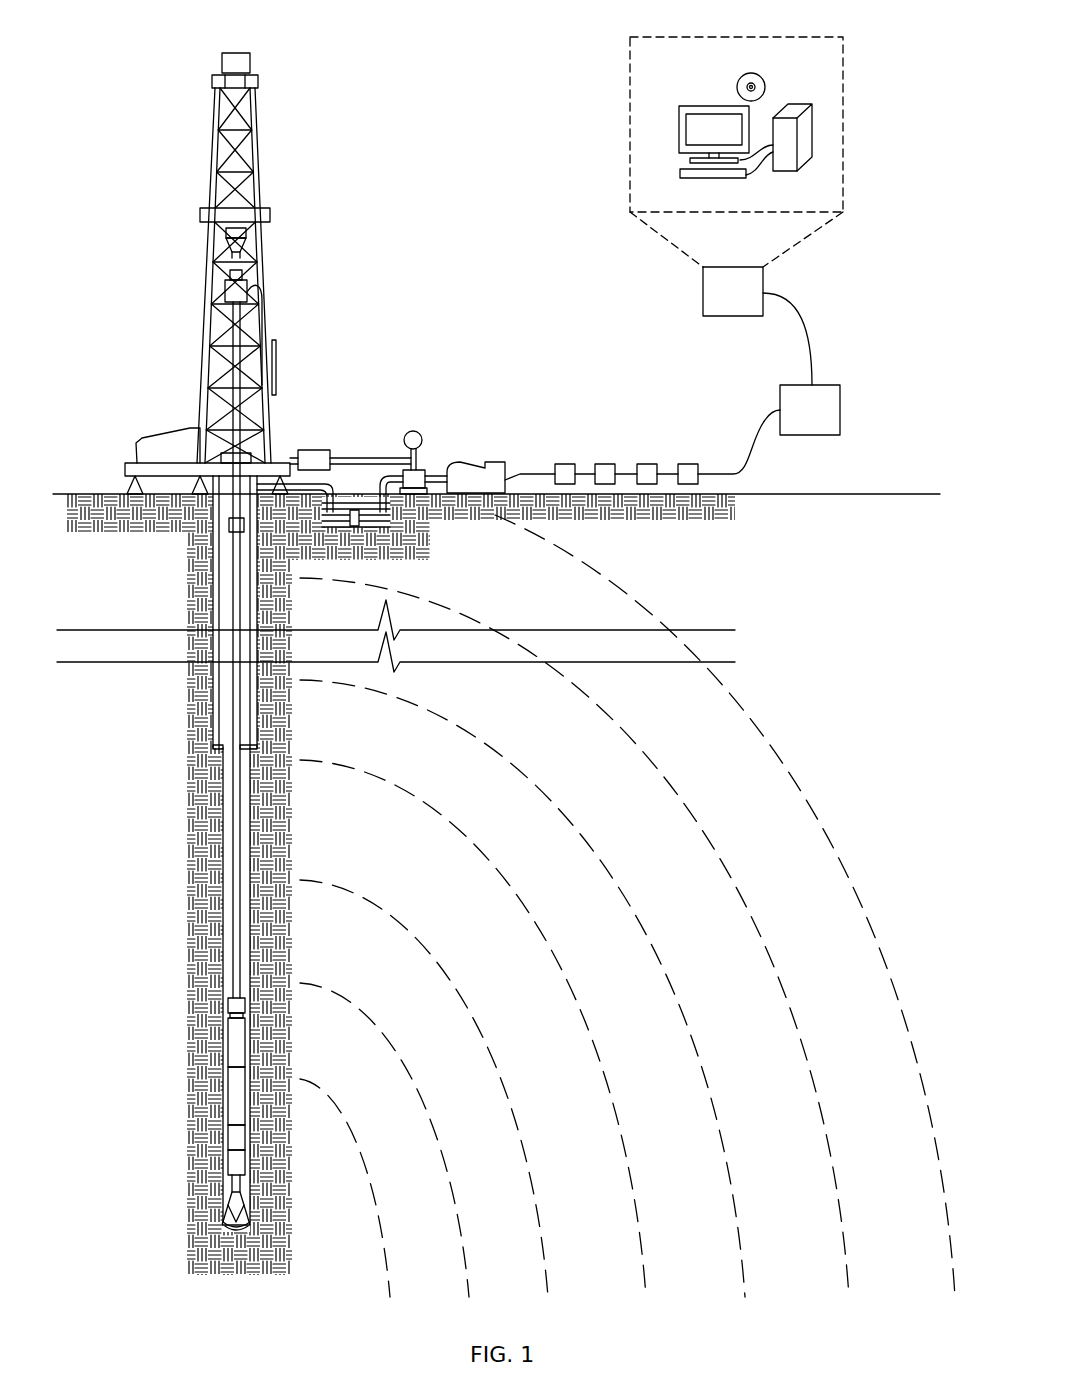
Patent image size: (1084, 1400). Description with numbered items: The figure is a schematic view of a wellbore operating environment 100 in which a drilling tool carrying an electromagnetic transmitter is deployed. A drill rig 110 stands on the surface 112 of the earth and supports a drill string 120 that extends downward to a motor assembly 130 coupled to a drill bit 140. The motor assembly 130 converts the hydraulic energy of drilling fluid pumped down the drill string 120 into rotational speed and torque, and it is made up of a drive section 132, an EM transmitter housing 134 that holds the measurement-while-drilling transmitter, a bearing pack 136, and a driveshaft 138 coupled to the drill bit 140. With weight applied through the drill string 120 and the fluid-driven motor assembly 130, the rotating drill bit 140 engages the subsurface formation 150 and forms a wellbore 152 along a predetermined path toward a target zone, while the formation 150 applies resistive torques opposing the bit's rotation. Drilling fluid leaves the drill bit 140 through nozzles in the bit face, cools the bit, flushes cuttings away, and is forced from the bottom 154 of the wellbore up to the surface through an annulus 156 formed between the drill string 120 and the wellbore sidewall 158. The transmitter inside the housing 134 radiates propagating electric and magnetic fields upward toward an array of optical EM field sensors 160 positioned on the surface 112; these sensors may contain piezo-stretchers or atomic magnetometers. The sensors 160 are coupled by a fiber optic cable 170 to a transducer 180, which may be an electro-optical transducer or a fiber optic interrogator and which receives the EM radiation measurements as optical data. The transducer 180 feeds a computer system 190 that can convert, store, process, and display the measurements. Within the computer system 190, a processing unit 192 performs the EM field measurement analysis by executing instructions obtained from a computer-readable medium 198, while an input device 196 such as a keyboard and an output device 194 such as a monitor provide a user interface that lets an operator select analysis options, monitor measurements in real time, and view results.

The operating environment 100 is at (435, 290).
The drill rig 110 is at (265, 300).
The surface 112 is at (75, 494).
The drill string 120 is at (242, 797).
The motor assembly 130 is at (237, 1124).
The drive section 132 is at (235, 1098).
The EM transmitter housing 134 is at (237, 1146).
The bearing pack 136 is at (236, 1158).
The driveshaft 138 is at (230, 1185).
The drill bit 140 is at (225, 1210).
The subsurface formation 150 is at (480, 934).
The wellbore 152 is at (250, 1020).
The bottom of the wellbore 154 is at (240, 1225).
The annulus 156 is at (247, 892).
The wellbore sidewall 158 is at (222, 958).
The array of optical EM field sensors 160 is at (565, 464).
The fiber optic cable 170 is at (546, 462).
The transducer 180 is at (840, 410).
The computer system 190 is at (703, 293).
The processing unit 192 is at (802, 104).
The output device 194 is at (679, 120).
The input device 196 is at (700, 178).
The computer-readable medium 198 is at (748, 73).